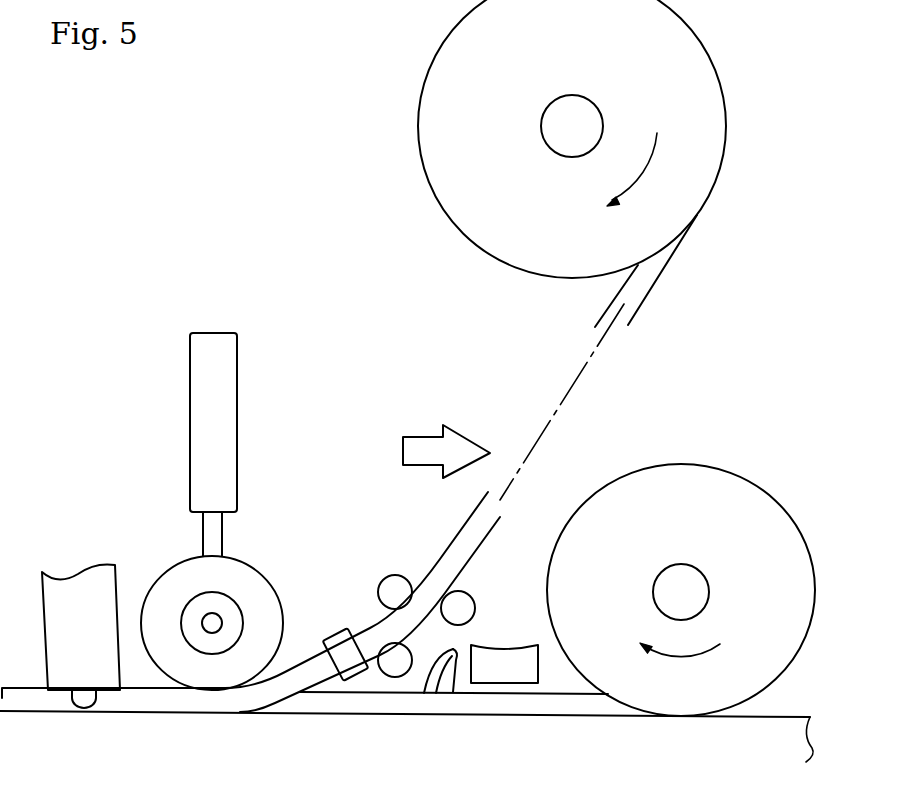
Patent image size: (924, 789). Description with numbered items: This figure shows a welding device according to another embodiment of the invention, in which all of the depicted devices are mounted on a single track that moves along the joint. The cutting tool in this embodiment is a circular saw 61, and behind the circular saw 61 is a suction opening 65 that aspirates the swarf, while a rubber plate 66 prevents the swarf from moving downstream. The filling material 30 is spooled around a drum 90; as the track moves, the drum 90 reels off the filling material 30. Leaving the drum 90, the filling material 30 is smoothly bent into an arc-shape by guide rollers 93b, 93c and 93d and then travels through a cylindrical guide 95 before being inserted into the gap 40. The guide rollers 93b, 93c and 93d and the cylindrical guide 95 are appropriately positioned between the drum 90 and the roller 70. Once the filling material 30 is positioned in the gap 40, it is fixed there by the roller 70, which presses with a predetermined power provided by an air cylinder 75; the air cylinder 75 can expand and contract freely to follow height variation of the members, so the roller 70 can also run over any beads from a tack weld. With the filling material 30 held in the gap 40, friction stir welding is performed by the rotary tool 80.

The filling material 30 is at (566, 397).
The gap 40 is at (558, 716).
The circular saw 61 is at (678, 483).
The suction opening 65 is at (495, 677).
The rubber plate 66 is at (423, 697).
The roller 70 is at (182, 558).
The air cylinder 75 is at (238, 412).
The rotary tool 80 is at (85, 590).
The drum 90 is at (430, 177).
The guide roller 93b is at (498, 582).
The guide roller 93c is at (386, 578).
The guide roller 93d is at (390, 678).
The cylindrical guide 95 is at (336, 630).